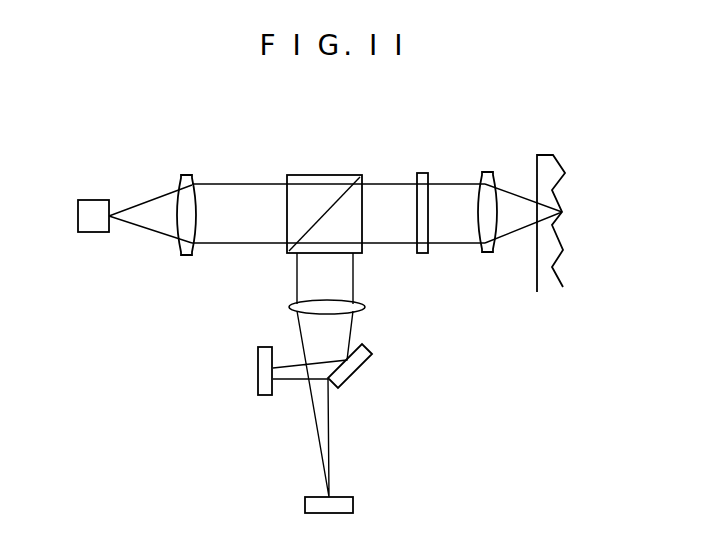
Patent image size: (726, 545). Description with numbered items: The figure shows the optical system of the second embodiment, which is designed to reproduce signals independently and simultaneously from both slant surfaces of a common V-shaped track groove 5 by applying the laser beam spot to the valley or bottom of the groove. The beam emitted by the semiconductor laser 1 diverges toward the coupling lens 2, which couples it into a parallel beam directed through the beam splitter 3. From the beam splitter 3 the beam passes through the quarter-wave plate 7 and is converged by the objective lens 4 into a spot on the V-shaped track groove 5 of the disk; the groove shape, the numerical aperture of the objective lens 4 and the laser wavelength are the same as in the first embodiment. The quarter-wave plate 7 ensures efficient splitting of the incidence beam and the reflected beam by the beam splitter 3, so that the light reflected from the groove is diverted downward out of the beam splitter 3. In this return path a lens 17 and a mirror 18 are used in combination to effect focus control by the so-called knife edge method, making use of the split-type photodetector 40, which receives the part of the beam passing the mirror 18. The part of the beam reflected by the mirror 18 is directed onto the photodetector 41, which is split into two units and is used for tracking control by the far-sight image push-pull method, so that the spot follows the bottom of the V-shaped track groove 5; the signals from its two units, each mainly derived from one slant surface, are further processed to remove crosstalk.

The semiconductor laser 1 is at (95, 203).
The coupling lens 2 is at (183, 177).
The beam splitter 3 is at (338, 175).
The quarter-wave plate 7 is at (421, 173).
The objective lens 4 is at (485, 172).
The V-shaped track groove 5 is at (548, 157).
The lens 17 is at (357, 304).
The mirror 18 is at (355, 366).
The photodetector 41 is at (258, 367).
The split-type photodetector 40 is at (355, 506).